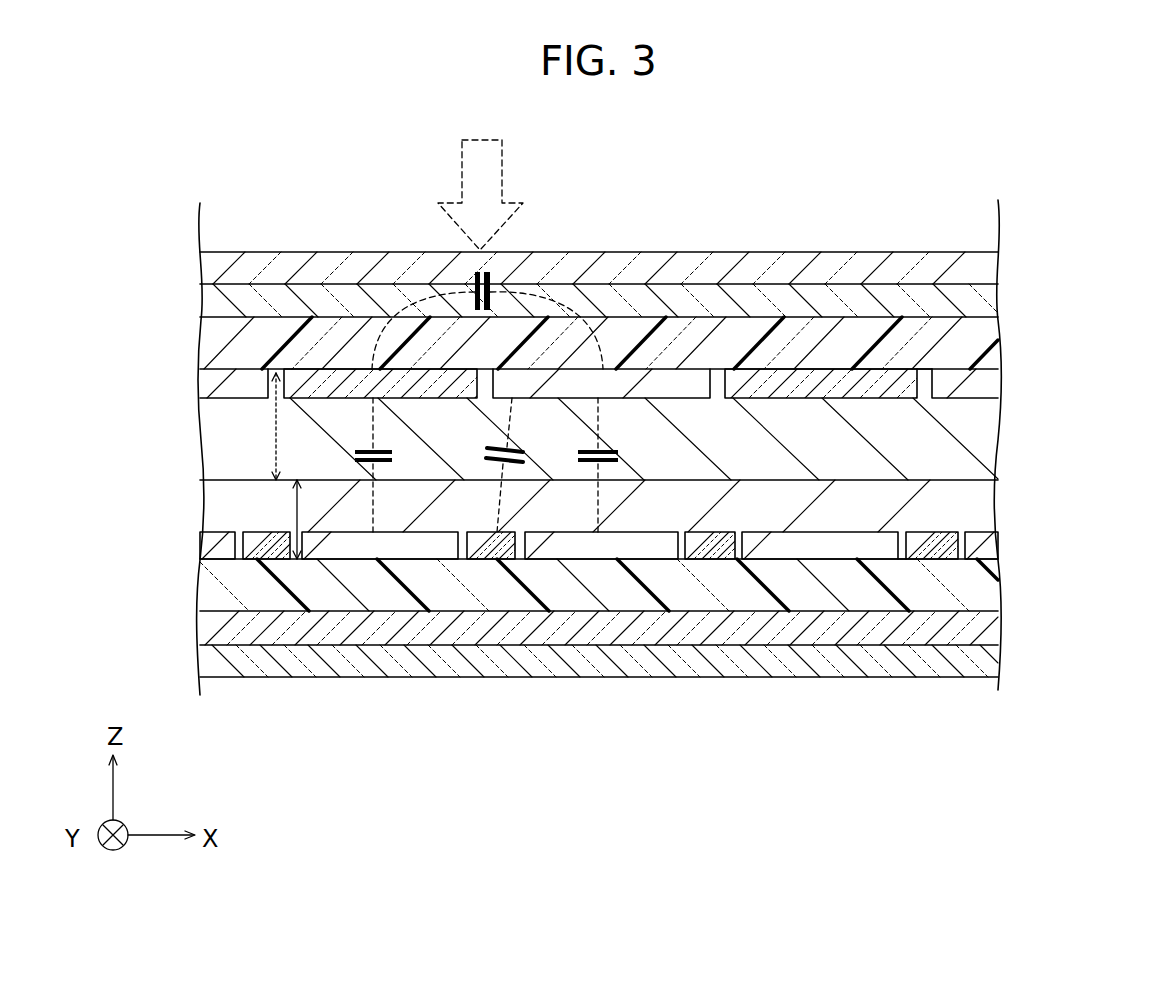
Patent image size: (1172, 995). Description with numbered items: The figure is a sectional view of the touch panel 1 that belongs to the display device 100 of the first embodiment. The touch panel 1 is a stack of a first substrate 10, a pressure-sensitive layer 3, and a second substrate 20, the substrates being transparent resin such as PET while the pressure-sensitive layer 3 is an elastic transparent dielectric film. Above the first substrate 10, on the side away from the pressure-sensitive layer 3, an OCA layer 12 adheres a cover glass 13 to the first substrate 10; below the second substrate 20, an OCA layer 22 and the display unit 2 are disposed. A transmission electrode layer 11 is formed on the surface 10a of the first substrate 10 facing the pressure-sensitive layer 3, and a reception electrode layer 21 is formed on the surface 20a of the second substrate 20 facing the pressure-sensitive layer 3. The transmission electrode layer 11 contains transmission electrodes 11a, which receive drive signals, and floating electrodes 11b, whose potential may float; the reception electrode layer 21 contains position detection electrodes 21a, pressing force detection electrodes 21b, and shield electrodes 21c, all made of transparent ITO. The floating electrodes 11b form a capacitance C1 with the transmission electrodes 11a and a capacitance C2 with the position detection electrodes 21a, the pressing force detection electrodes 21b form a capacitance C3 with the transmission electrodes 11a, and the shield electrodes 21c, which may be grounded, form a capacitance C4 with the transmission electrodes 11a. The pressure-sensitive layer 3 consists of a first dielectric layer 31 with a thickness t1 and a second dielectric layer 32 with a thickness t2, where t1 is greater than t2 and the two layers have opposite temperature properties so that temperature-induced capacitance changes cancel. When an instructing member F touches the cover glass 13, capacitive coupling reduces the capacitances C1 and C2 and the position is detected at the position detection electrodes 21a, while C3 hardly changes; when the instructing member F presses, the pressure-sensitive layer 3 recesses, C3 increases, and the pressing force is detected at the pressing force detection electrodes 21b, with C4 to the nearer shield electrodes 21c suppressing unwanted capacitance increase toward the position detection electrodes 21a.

The display device 100 is at (272, 177).
The touch panel 1 is at (959, 249).
The first substrate 10 is at (927, 335).
The surface of the first substrate 10a is at (921, 373).
The transmission electrode layer 11 is at (800, 404).
The transmission electrodes 11a is at (247, 377).
The floating electrodes 11b is at (339, 387).
The OCA layer 12 is at (783, 300).
The cover glass 13 is at (732, 266).
The display unit 2 is at (985, 660).
The second substrate 20 is at (880, 603).
The surface of the second substrate 20a is at (872, 557).
The reception electrode layer 21 is at (816, 526).
The position detection electrodes 21a is at (223, 561).
The pressing force detection electrodes 21b is at (605, 560).
The shield electrodes 21c is at (278, 560).
The OCA layer 22 is at (925, 633).
The pressure-sensitive layer 3 is at (110, 423).
The first dielectric layer 31 is at (245, 450).
The second dielectric layer 32 is at (245, 497).
The capacitance C1 is at (496, 277).
The capacitance C2 is at (390, 470).
The capacitance C3 is at (613, 473).
The capacitance C4 is at (521, 474).
The instructing member F is at (504, 178).
The thickness of the first dielectric layer t1 is at (275, 476).
The thickness of the second dielectric layer t2 is at (296, 517).